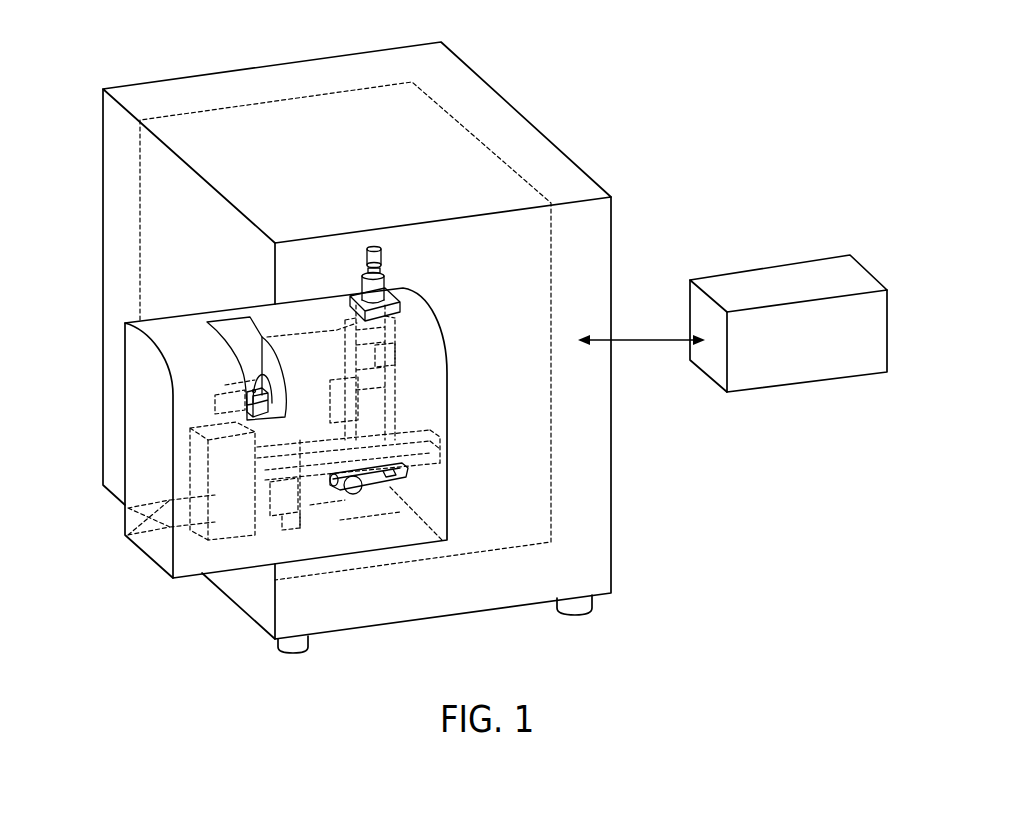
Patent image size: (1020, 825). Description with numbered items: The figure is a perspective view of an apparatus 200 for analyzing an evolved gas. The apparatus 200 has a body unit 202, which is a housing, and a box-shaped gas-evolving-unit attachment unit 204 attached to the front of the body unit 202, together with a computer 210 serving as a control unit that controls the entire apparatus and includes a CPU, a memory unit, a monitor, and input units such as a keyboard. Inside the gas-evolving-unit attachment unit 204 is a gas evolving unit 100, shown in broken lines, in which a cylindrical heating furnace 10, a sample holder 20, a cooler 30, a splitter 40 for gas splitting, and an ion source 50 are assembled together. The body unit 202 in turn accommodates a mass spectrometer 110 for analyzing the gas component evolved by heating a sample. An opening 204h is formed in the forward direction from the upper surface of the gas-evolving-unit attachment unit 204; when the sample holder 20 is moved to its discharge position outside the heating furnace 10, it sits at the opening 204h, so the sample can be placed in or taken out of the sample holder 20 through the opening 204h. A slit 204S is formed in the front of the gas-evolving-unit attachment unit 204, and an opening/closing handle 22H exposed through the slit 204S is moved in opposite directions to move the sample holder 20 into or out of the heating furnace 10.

The apparatus for analyzing an evolved gas 200 is at (799, 48).
The body unit 202 is at (523, 135).
The gas-evolving-unit attachment unit 204 is at (447, 435).
The opening 204h is at (228, 335).
The slit 204S is at (397, 485).
The gas evolving unit 100 is at (447, 312).
The mass spectrometer 110 is at (375, 322).
The heating furnace 10 is at (315, 328).
The sample holder 20 is at (243, 378).
The opening/closing handle 22H is at (357, 494).
The cooler 30 is at (170, 547).
The splitter 40 is at (400, 300).
The ion source 50 is at (407, 350).
The computer 210 is at (807, 383).